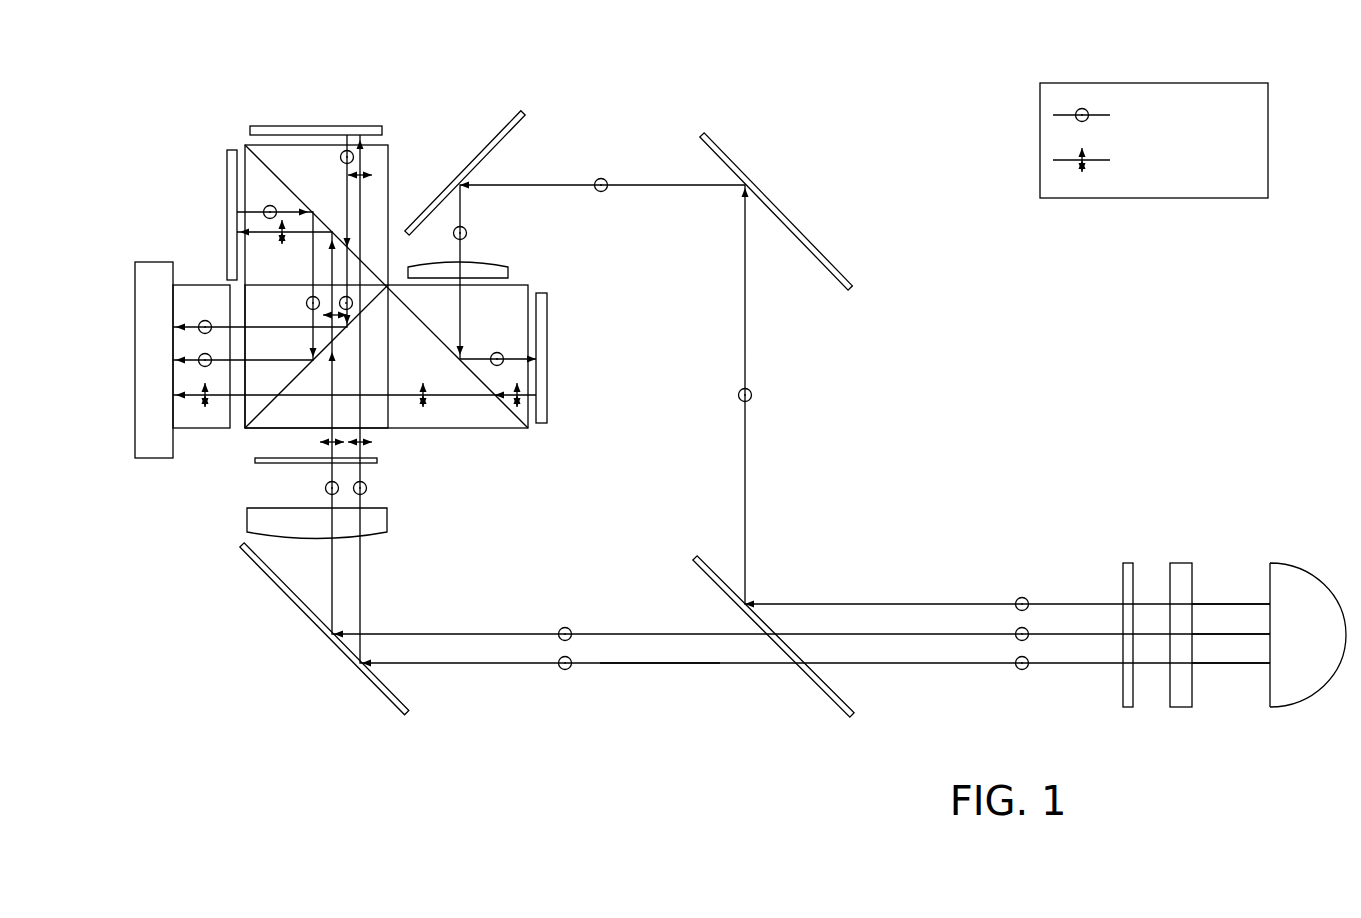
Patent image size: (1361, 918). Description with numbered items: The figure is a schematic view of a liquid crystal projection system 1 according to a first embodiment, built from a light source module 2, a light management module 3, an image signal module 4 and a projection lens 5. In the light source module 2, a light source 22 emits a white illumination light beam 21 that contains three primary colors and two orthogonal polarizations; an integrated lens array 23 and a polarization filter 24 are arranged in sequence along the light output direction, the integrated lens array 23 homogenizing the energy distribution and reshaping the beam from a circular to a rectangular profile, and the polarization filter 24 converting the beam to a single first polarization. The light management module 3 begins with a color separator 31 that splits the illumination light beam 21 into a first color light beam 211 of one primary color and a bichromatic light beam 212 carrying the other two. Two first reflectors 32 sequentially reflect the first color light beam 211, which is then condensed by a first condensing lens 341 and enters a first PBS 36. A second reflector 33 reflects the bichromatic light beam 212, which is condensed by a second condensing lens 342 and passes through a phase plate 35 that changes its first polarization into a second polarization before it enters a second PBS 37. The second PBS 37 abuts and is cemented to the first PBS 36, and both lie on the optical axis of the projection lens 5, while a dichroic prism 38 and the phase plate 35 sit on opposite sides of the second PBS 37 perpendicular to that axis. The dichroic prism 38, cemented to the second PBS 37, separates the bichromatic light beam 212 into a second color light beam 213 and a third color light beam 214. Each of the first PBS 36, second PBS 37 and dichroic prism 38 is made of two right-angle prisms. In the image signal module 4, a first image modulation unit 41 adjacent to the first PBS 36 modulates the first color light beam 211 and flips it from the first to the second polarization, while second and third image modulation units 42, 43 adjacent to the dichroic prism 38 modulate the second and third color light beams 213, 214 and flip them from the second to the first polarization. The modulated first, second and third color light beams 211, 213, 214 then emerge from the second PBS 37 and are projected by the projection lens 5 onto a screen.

The liquid crystal projection system 1 is at (1060, 317).
The light source module 2 is at (1215, 538).
The illumination light beam 21 is at (1226, 690).
The first color light beam 211 is at (190, 395).
The bichromatic light beam 212 is at (663, 690).
The second color light beam 213 is at (190, 360).
The third color light beam 214 is at (190, 327).
The light source 22 is at (1310, 552).
The integrated lens array 23 is at (1180, 552).
The polarization filter 24 is at (1127, 552).
The light management module 3 is at (766, 150).
The color separator 31 is at (815, 690).
The first reflector 32 is at (481, 152).
The second reflector 33 is at (292, 598).
The first condensing lens 341 is at (508, 272).
The second condensing lens 342 is at (247, 518).
The phase plate 35 is at (255, 460).
The first PBS 36 is at (483, 432).
The second PBS 37 is at (382, 432).
The dichroic prism 38 is at (388, 175).
The image signal module 4 is at (244, 112).
The first image modulation unit 41 is at (547, 323).
The second image modulation unit 42 is at (227, 180).
The third image modulation unit 43 is at (313, 126).
The projection lens 5 is at (135, 422).